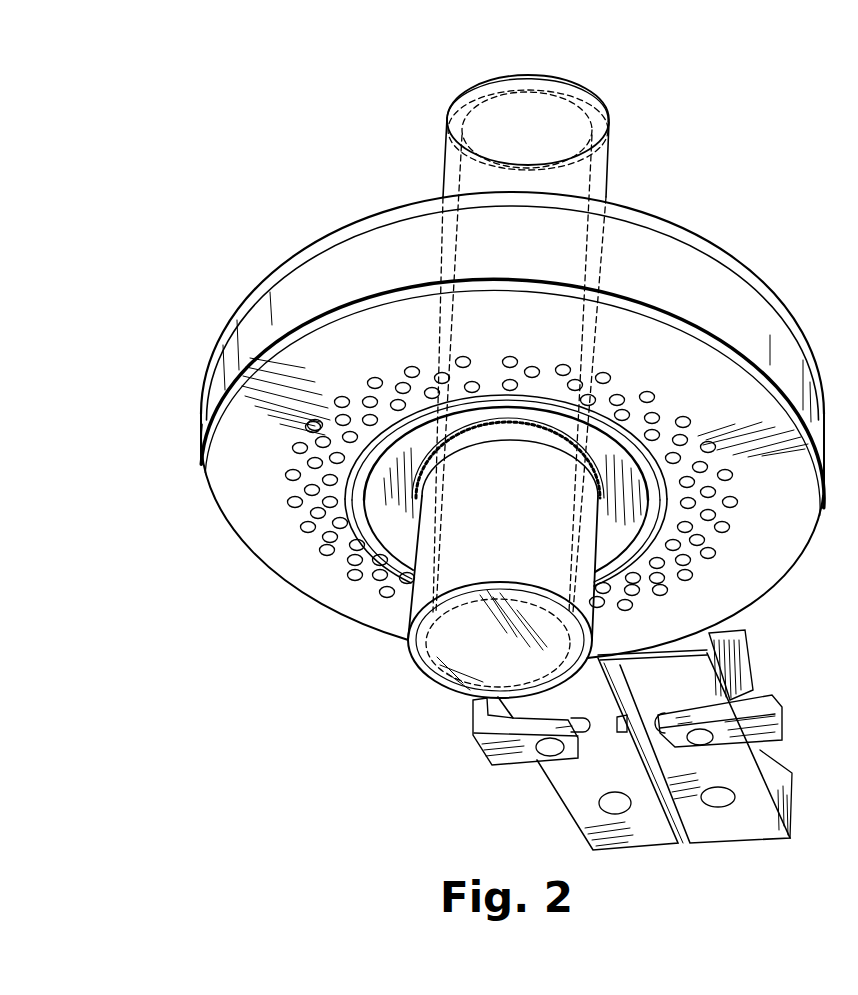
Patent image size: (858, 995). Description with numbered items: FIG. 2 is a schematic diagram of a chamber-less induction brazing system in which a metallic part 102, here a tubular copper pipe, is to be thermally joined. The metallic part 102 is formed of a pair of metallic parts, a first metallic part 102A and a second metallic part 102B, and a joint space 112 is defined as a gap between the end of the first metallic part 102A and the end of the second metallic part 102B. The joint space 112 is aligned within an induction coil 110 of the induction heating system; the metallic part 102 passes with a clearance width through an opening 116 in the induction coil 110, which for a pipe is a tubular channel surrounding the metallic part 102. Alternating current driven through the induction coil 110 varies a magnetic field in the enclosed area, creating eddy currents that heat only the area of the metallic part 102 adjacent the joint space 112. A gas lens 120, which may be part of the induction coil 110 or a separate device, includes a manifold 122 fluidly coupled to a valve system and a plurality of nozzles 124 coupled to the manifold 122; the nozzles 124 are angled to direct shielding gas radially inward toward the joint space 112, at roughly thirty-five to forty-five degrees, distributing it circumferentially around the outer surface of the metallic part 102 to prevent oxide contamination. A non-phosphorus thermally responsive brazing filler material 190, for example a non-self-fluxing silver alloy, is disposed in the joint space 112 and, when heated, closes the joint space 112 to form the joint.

The metallic part 102 is at (528, 386).
The first metallic part 102A is at (560, 568).
The second metallic part 102B is at (470, 173).
The induction coil 110 is at (565, 447).
The joint space 112 is at (527, 433).
The opening 116 is at (412, 445).
The gas lens 120 is at (280, 428).
The manifold 122 is at (657, 343).
The nozzles 124 is at (323, 550).
The non-phosphorus thermally responsive material 190 is at (488, 420).